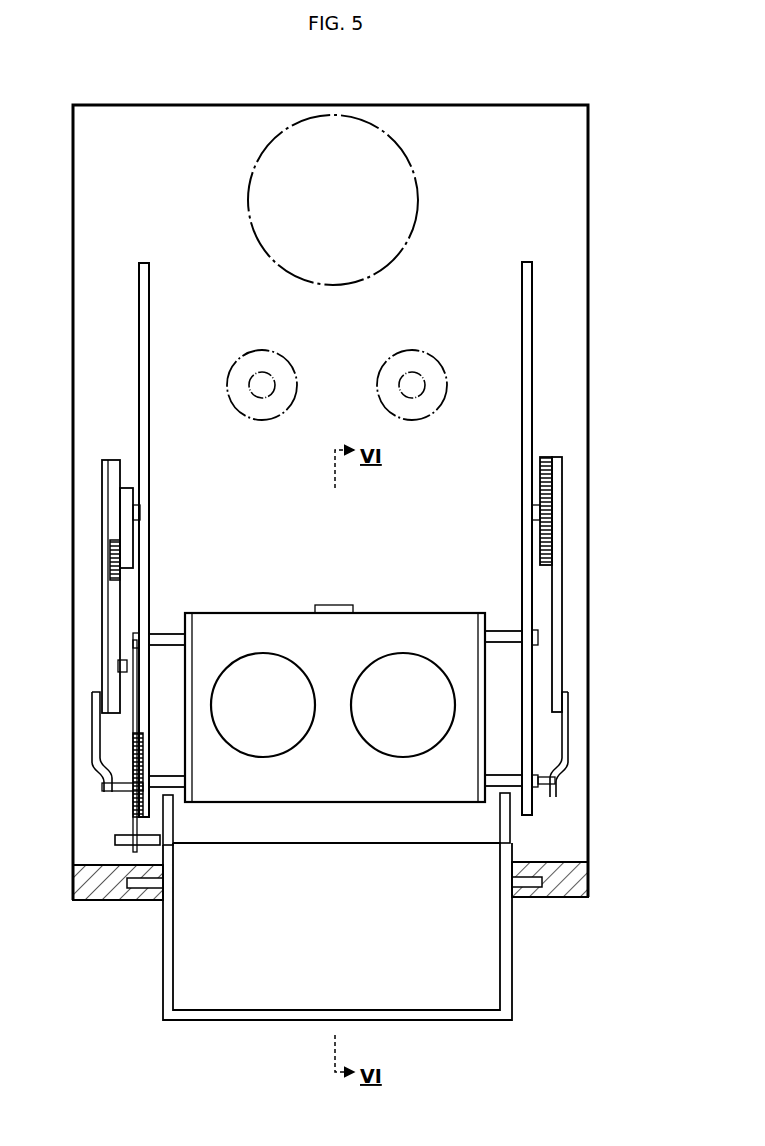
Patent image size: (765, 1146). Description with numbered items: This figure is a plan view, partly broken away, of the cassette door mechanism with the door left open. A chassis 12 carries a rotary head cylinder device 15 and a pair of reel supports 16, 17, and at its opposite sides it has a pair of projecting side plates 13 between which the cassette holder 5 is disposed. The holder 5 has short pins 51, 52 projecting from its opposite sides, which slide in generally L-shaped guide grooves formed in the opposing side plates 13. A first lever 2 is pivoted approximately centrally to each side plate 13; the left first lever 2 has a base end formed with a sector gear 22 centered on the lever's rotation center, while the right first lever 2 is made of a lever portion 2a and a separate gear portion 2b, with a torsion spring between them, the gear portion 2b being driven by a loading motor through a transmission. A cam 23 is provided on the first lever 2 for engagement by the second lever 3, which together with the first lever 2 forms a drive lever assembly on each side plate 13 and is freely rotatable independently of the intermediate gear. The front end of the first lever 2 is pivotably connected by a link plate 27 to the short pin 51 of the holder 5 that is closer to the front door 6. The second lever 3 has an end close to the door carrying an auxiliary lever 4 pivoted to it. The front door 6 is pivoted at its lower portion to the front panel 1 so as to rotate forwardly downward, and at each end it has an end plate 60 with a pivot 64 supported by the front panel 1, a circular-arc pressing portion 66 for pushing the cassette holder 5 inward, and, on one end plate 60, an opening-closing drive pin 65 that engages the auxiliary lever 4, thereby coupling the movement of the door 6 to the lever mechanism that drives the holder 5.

The front panel 1 is at (125, 890).
The first lever 2 is at (105, 588).
The lever portion 2a is at (560, 567).
The gear portion 2b is at (552, 520).
The second lever 3 is at (128, 643).
The auxiliary lever 4 is at (133, 827).
The cassette holder 5 is at (303, 627).
The front door 6 is at (225, 983).
The chassis 12 is at (568, 157).
The side plate 13 is at (139, 347).
The rotary head cylinder device 15 is at (416, 151).
The reel support 16 is at (288, 352).
The reel support 17 is at (438, 352).
The sector gear 22 is at (112, 548).
The cam 23 is at (125, 537).
The link plate 27 is at (92, 747).
The short pin 51 is at (163, 773).
The short pin 52 is at (167, 635).
The end plate 60 is at (165, 968).
The pivot 64 is at (120, 875).
The opening-closing drive pin 65 is at (73, 870).
The circular-arc pressing portion 66 is at (168, 816).